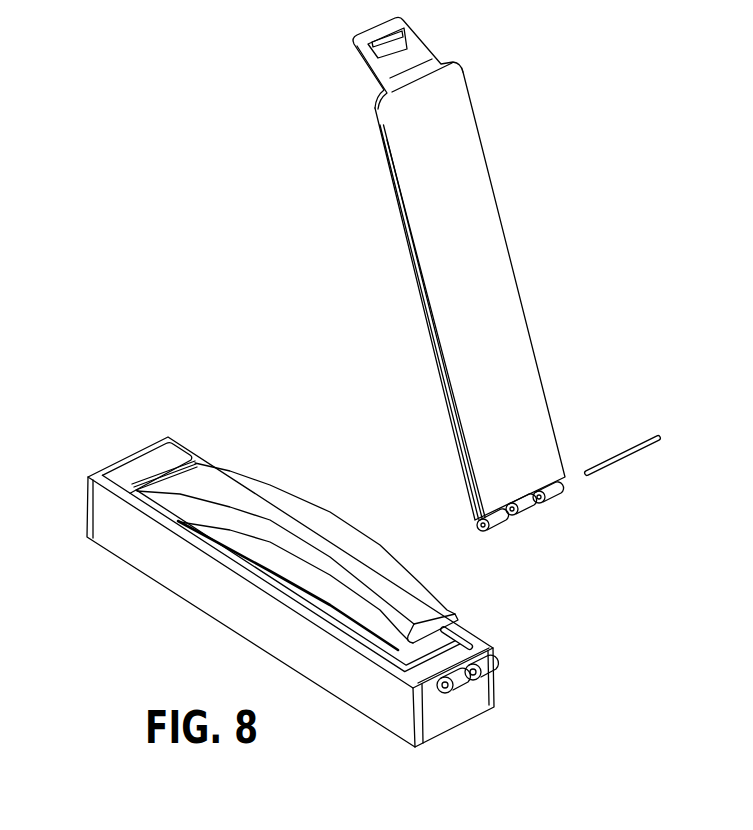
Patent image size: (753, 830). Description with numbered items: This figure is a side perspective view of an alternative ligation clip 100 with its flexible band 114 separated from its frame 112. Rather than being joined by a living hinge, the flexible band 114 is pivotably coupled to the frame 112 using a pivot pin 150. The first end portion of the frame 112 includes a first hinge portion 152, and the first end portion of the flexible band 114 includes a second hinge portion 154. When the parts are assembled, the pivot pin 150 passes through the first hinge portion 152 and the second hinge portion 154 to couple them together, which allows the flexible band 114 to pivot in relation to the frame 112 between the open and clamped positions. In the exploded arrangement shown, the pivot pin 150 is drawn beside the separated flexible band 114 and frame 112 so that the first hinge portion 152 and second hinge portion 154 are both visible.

The ligation clip 100 is at (203, 266).
The frame 112 is at (117, 566).
The flexible band 114 is at (519, 252).
The pivot pin 150 is at (603, 460).
The first hinge portion 152 is at (489, 667).
The second hinge portion 154 is at (525, 512).